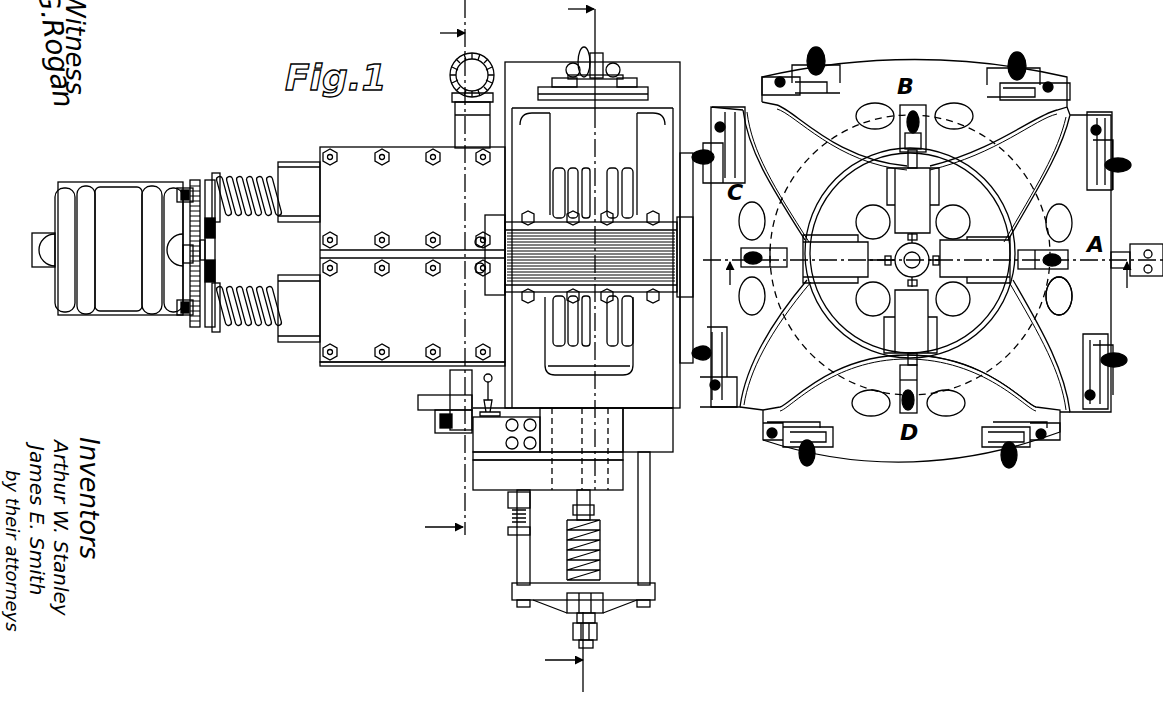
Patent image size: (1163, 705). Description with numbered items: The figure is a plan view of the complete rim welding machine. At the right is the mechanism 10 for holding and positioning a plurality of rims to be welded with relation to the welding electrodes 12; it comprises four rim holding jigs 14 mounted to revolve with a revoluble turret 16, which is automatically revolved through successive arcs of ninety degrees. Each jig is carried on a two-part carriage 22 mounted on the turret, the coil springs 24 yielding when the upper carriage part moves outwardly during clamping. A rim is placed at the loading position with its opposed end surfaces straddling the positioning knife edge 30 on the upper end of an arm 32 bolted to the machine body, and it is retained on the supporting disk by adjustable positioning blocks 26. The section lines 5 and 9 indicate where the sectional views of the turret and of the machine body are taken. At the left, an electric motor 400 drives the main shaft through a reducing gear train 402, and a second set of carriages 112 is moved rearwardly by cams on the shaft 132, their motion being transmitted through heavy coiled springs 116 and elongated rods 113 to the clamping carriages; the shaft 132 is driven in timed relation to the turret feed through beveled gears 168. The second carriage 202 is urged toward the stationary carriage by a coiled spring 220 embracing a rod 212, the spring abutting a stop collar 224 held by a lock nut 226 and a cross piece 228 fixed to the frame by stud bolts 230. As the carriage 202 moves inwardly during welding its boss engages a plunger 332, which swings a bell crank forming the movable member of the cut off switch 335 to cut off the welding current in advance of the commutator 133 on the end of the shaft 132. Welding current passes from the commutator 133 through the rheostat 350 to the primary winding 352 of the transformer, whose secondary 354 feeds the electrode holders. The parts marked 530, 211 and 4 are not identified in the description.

The electric motor 400 is at (117, 173).
The elongated rods 113 is at (187, 190).
The reducing gear train 402 is at (233, 250).
The heavy coiled springs 116 is at (250, 175).
The second set of carriages 112 is at (290, 287).
The cam shaft 132 is at (457, 147).
The beveled gears 168 is at (465, 84).
The mechanism 10 is at (804, 148).
The welding electrodes 12 is at (592, 249).
The rheostat 350 is at (612, 62).
The primary winding 352 is at (612, 167).
The secondary 354 is at (588, 362).
The cut off switch 335 is at (474, 383).
The commutator 133 is at (445, 423).
The block 530 is at (518, 418).
The second carriage 202 is at (608, 442).
The plunger 332 is at (483, 457).
The plate 211 is at (613, 480).
The stud bolts 230 is at (647, 573).
The stop collar 224 is at (590, 517).
The lock nut 226 is at (580, 503).
The coiled spring 220 is at (603, 537).
The cross piece 228 is at (555, 603).
The rod 212 is at (592, 615).
The section line 9— 9 is at (564, 653).
The rim holding jigs 14 is at (968, 50).
The revoluble turret 16 is at (983, 178).
The coil springs 24 is at (990, 366).
The arm 32 is at (1062, 308).
The carriage 22 is at (827, 251).
The adjustable positioning blocks 26 is at (1085, 166).
The positioning knife edge 30 is at (1148, 250).
The section line 4 is at (723, 285).
The section line 5— 5 is at (1130, 289).